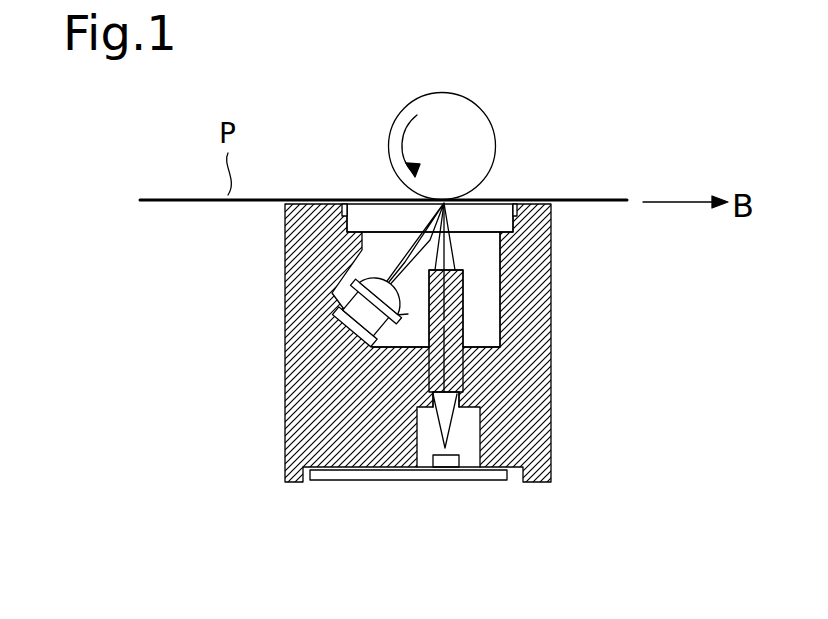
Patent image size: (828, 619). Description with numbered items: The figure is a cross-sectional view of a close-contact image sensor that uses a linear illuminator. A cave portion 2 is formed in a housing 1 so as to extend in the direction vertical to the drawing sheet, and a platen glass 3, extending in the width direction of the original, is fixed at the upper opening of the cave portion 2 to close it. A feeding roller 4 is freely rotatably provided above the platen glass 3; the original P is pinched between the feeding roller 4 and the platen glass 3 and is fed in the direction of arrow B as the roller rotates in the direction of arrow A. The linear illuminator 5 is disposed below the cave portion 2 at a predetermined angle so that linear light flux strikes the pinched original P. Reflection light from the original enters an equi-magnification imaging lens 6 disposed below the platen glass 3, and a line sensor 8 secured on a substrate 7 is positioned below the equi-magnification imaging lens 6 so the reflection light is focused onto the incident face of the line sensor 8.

The housing 1 is at (542, 305).
The cave portion 2 is at (486, 284).
The platen glass 3 is at (496, 219).
The feeding roller 4 is at (483, 132).
The linear illuminator 5 is at (325, 336).
The equi-magnification imaging lens 6 is at (455, 368).
The substrate 7 is at (338, 473).
The line sensor 8 is at (446, 478).